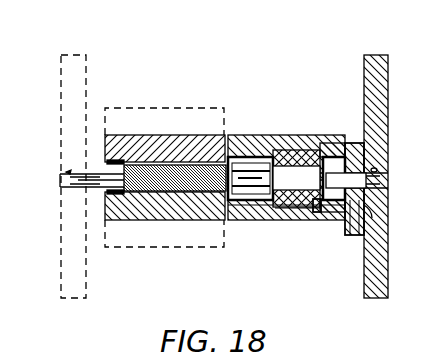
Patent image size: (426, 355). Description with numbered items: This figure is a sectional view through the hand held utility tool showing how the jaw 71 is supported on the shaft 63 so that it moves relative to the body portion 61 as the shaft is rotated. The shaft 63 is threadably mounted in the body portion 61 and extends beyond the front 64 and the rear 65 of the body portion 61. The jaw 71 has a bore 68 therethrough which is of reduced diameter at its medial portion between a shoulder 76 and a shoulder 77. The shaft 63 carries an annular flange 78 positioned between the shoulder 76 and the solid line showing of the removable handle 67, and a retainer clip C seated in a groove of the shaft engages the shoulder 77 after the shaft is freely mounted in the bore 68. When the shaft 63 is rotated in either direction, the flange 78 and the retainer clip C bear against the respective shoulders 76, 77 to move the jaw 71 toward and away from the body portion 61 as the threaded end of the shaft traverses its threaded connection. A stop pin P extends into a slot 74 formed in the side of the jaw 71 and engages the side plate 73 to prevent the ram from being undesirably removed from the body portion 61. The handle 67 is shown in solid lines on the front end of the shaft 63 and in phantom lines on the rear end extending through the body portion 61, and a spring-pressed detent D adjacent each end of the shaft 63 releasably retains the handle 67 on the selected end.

The removable handle 67 is at (72, 56).
The rear of the body portion 65 is at (106, 219).
The body portion 61 is at (175, 150).
The side plate 73 is at (212, 219).
The shaft 63 is at (57, 178).
The spring-pressed detent D is at (66, 172).
The shoulder 77 is at (262, 140).
The bore 68 is at (238, 160).
The jaw 71 is at (292, 158).
The shoulder 76 is at (328, 142).
The annular flange 78 is at (366, 156).
The slot 74 is at (300, 214).
The retainer clip C is at (290, 212).
The stop pin P is at (318, 214).
The front of the body portion 64 is at (355, 236).